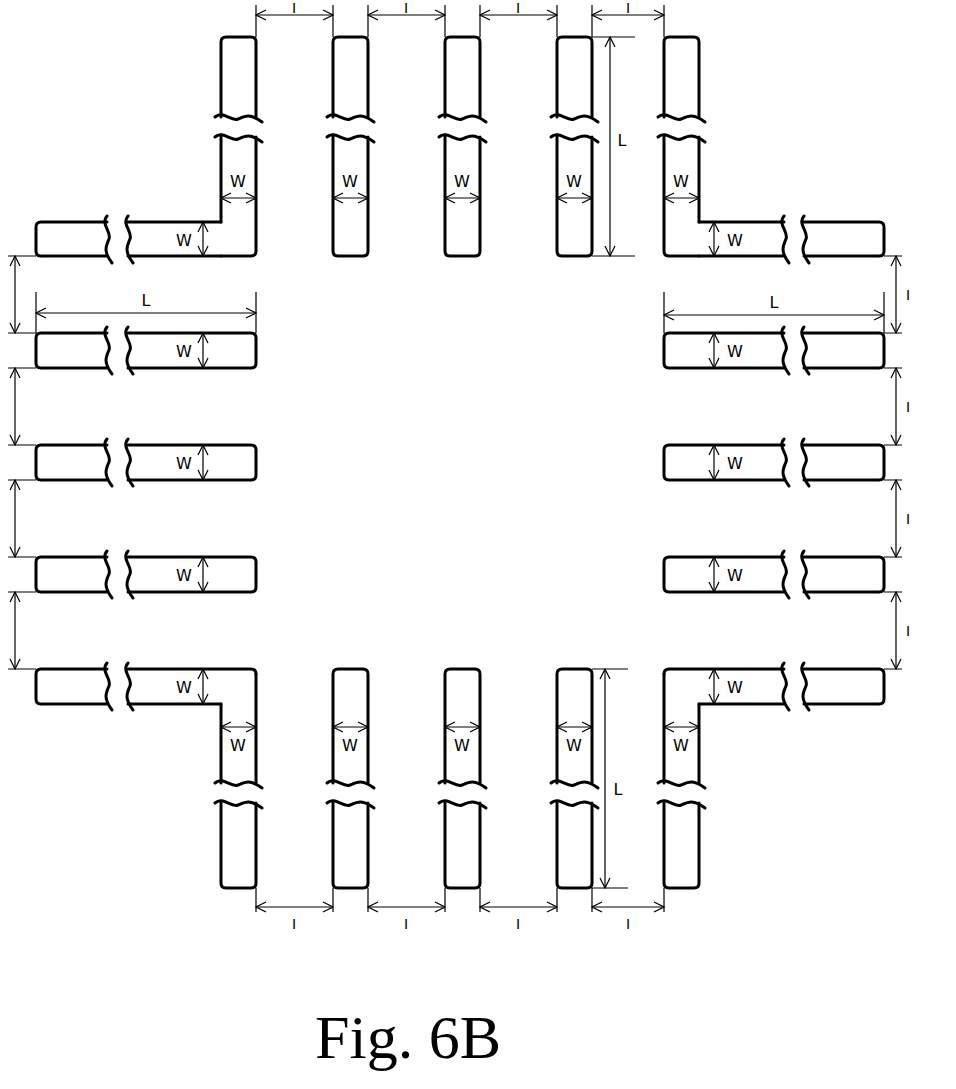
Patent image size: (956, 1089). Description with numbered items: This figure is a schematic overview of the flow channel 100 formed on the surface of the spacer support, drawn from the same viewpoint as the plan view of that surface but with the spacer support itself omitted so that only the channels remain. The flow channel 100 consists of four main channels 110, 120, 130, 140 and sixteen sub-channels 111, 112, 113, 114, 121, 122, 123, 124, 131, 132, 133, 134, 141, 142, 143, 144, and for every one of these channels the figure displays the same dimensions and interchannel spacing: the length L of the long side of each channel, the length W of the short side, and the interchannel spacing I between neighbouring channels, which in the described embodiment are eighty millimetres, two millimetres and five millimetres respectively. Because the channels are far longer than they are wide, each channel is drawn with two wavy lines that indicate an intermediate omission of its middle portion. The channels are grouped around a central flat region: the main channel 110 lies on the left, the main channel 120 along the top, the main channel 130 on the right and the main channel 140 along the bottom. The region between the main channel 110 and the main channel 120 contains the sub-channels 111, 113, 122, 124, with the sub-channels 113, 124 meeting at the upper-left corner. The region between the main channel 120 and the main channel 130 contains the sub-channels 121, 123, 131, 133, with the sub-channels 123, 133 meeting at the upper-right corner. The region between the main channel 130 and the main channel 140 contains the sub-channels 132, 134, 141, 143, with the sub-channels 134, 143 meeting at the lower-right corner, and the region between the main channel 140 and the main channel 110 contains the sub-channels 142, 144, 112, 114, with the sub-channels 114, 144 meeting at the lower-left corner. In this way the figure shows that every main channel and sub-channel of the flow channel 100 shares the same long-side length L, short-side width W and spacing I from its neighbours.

The flow channel 100 is at (108, 814).
The main channel 110 is at (244, 462).
The sub-channel 111 is at (244, 352).
The sub-channel 112 is at (244, 574).
The sub-channel 113 is at (94, 235).
The sub-channel 114 is at (78, 690).
The main channel 120 is at (460, 233).
The sub-channel 121 is at (573, 235).
The sub-channel 122 is at (348, 233).
The sub-channel 123 is at (688, 83).
The sub-channel 124 is at (241, 78).
The main channel 130 is at (673, 461).
The sub-channel 131 is at (673, 347).
The sub-channel 132 is at (673, 573).
The sub-channel 133 is at (850, 232).
The sub-channel 134 is at (820, 686).
The main channel 140 is at (463, 690).
The sub-channel 141 is at (574, 690).
The sub-channel 142 is at (350, 693).
The sub-channel 143 is at (686, 878).
The sub-channel 144 is at (232, 860).